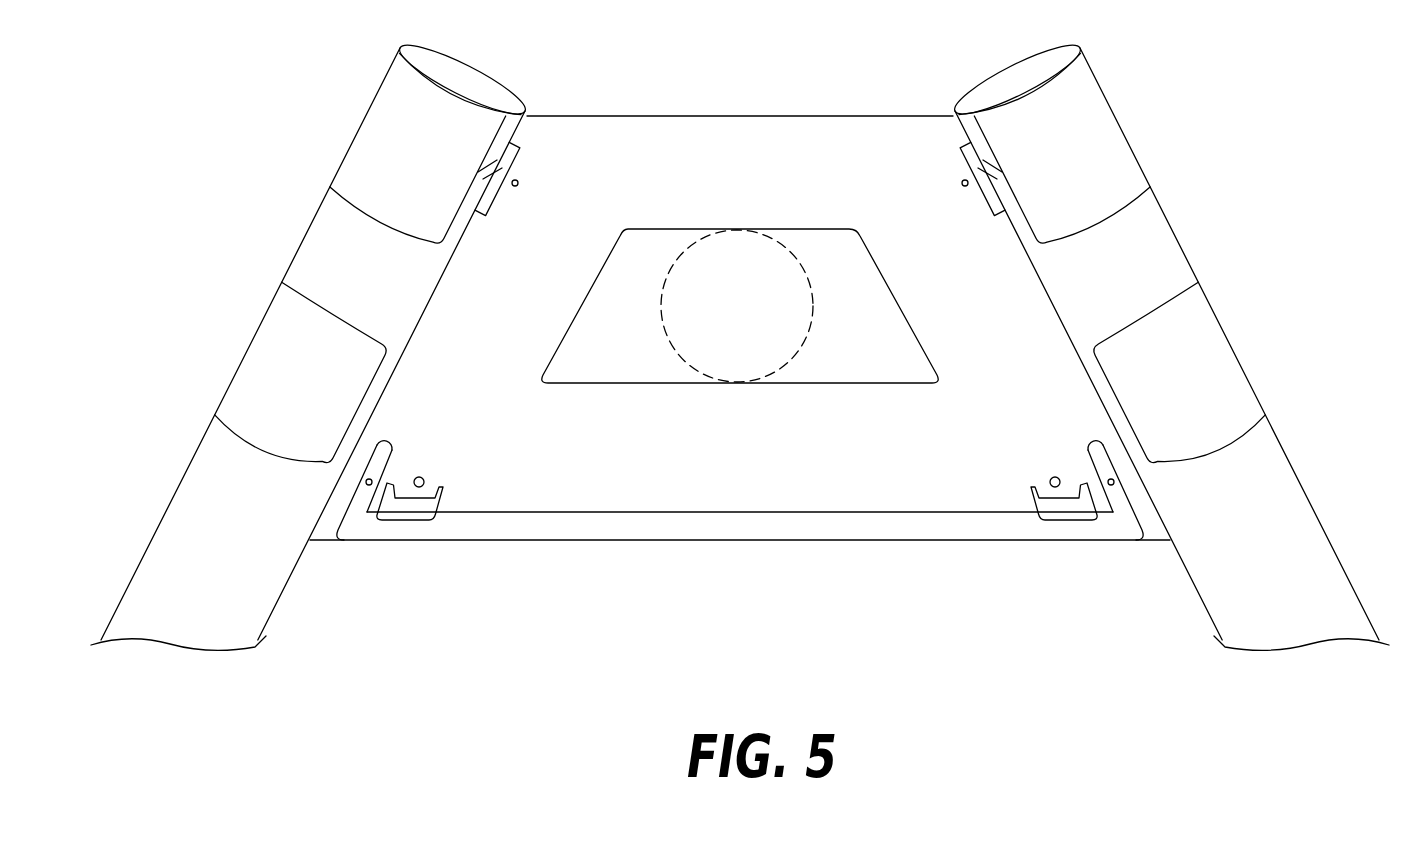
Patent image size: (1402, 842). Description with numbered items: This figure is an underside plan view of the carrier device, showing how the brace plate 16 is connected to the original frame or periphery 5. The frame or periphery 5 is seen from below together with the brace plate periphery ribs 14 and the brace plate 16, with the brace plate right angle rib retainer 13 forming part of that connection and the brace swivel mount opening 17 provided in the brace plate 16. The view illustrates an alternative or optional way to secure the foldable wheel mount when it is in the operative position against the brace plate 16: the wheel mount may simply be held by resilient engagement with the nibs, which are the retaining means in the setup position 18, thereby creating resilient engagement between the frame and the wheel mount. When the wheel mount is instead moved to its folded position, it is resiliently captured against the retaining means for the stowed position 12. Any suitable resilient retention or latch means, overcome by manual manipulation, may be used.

The frame/periphery 5 is at (313, 252).
The retaining means in stowed position 12 is at (403, 518).
The brace plate right angle rib retainer 13 is at (725, 528).
The brace plate periphery rib 14 is at (357, 173).
The brace plate 16 is at (768, 142).
The brace swivel mount opening 17 is at (833, 272).
The retaining means in the setup position 18 is at (518, 183).